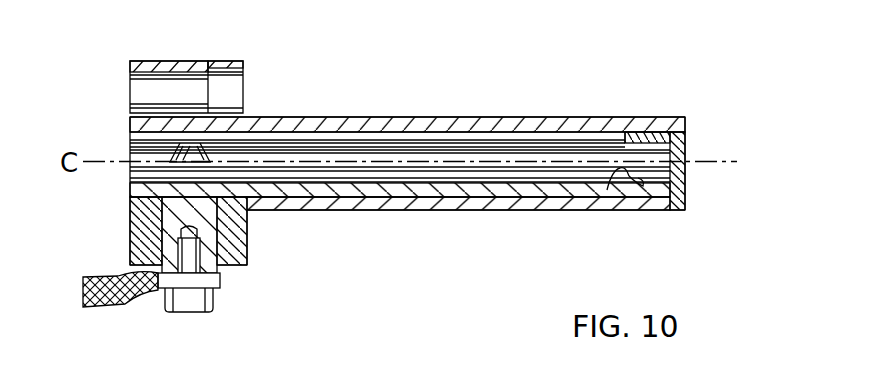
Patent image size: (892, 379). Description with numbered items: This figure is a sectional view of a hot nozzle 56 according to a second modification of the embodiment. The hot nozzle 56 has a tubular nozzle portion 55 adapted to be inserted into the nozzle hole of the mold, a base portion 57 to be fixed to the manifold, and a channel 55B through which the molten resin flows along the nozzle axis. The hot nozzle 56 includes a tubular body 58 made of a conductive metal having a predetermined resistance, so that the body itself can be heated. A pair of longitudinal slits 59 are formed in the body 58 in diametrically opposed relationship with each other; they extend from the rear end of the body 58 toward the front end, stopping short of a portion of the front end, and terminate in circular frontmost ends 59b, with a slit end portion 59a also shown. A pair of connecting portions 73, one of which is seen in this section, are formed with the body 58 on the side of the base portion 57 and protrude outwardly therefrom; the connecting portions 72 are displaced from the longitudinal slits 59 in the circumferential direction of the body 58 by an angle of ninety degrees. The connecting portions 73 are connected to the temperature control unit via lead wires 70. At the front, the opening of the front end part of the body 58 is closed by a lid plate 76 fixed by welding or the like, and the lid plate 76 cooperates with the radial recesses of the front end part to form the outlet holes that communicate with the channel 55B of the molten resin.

The tubular nozzle portion 55 is at (604, 114).
The channel 55B is at (381, 155).
The hot nozzle 56 is at (466, 96).
The base portion 57 is at (114, 222).
The tubular body 58 is at (433, 190).
The longitudinal slits 59 is at (531, 131).
The liner end portion 59a is at (616, 172).
The circular frontmost ends 59b is at (640, 183).
The lead wires 70 is at (122, 298).
The connecting portions 72 is at (215, 237).
The connecting portions 73 is at (372, 207).
The lid plate 76 is at (678, 150).